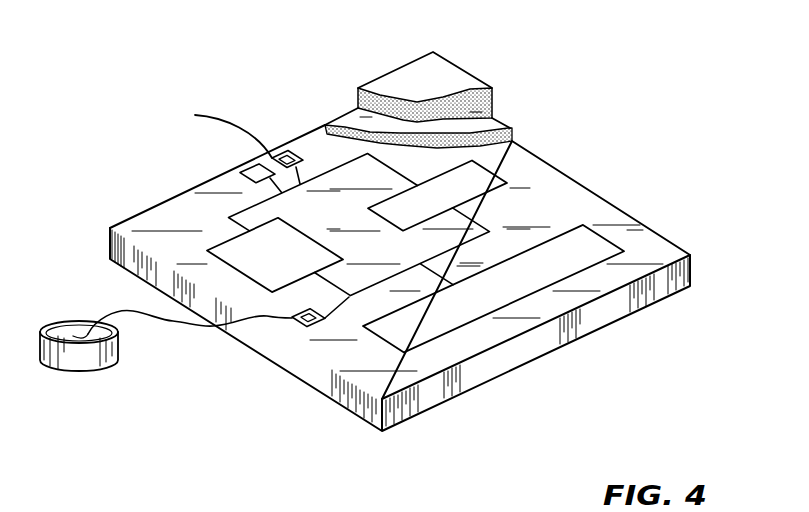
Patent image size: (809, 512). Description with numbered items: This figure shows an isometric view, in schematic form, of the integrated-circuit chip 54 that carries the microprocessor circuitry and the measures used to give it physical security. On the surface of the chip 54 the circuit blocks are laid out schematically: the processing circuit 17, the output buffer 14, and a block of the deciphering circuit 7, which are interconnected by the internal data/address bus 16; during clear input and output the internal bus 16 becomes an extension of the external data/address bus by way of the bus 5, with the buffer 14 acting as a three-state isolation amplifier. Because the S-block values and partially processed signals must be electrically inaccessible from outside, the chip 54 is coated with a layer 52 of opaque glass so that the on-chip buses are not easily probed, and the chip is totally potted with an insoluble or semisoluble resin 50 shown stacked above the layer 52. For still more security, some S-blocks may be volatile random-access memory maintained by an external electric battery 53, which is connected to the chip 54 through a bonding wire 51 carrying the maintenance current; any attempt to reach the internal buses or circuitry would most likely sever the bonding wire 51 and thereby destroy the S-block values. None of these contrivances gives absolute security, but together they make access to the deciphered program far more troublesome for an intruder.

The bus 5 is at (325, 170).
The deciphering circuit block 7 is at (233, 242).
The buffer 14 is at (497, 183).
The data/address bus 16 is at (358, 296).
The processing circuit 17 is at (445, 326).
The resin 50 is at (450, 72).
The bonding wire 51 is at (172, 323).
The layer of opaque glass 52 is at (503, 128).
The external electric battery 53 is at (88, 363).
The chip 54 is at (602, 313).